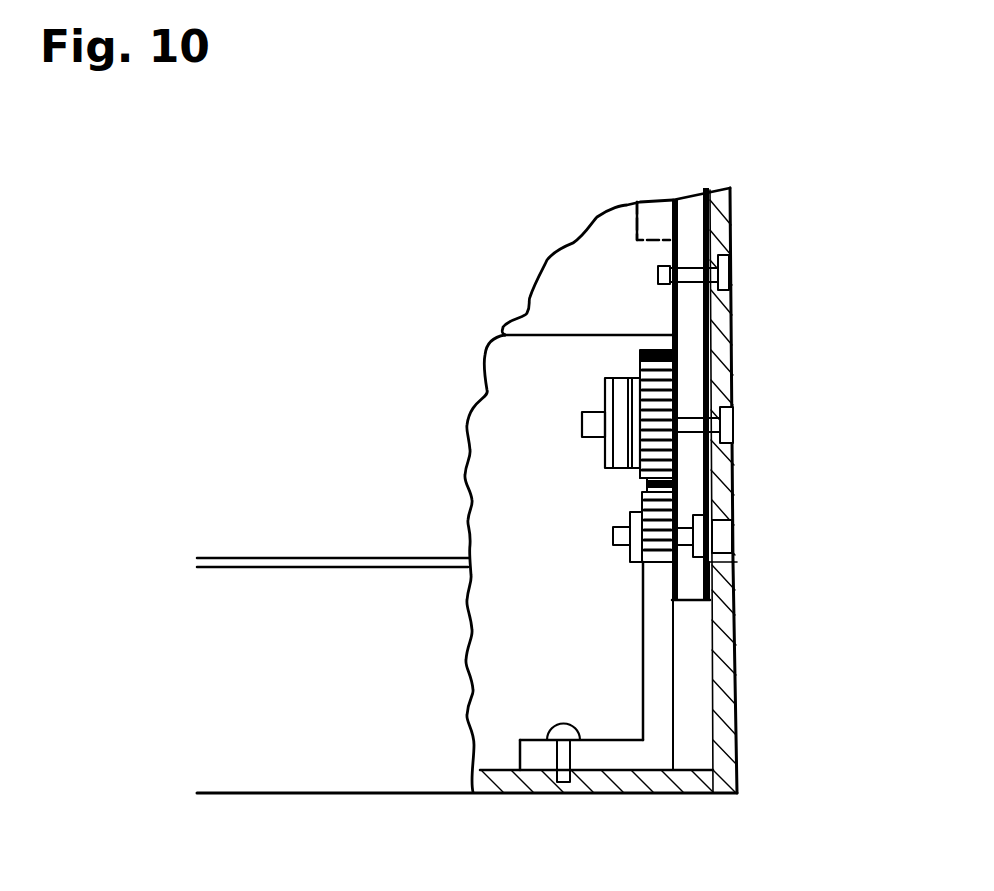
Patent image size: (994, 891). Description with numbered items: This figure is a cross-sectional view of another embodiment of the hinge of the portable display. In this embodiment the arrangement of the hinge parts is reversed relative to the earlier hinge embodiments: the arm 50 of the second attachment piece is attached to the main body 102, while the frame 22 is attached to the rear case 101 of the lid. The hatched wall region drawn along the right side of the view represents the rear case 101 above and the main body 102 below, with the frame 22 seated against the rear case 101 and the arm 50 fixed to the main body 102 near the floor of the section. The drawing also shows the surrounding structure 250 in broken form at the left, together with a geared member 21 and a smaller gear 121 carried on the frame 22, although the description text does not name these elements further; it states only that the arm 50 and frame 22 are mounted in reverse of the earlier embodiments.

The frame / housing 250 is at (557, 288).
The rear case 101 is at (727, 217).
The main body 102 is at (722, 693).
The frame 22 is at (687, 340).
The drive gear 21 is at (680, 447).
The small gear 121 is at (680, 565).
The arm 50 is at (632, 753).